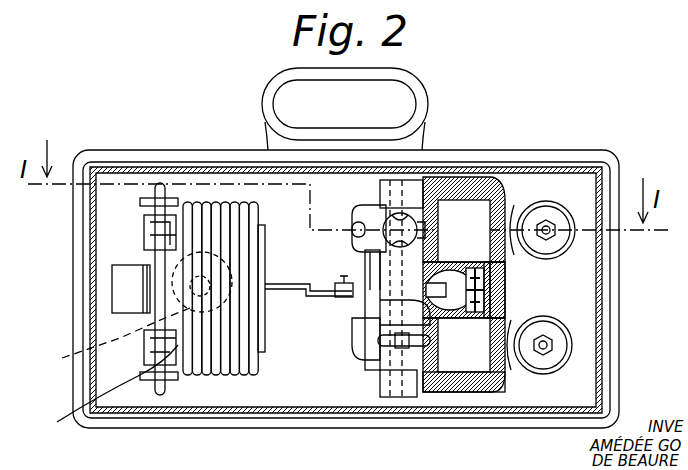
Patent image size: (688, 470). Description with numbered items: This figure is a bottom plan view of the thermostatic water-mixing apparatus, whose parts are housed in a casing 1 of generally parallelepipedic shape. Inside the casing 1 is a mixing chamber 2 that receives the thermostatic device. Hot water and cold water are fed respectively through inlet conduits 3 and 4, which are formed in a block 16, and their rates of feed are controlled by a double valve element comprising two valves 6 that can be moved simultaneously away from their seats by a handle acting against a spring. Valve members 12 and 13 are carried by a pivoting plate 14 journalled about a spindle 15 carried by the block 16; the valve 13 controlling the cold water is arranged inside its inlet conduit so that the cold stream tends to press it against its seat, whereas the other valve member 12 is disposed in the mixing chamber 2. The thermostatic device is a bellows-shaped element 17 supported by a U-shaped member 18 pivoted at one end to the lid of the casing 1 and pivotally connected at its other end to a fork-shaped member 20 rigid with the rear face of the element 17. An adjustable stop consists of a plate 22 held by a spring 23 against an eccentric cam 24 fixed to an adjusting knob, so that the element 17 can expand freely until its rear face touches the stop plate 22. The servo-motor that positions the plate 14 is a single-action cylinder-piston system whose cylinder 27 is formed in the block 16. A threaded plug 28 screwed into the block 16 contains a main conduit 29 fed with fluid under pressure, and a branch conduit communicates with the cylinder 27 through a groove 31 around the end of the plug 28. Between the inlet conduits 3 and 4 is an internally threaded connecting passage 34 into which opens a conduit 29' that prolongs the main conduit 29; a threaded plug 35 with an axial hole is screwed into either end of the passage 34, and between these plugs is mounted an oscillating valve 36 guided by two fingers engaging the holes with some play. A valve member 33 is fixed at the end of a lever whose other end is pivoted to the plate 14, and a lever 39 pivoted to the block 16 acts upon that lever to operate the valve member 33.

The casing 1 is at (85, 306).
The mixing chamber 2 is at (275, 380).
The inlet conduit 3 is at (467, 210).
The inlet conduit 4 is at (482, 360).
The valves 6 is at (568, 240).
The valve member 12 is at (380, 200).
The valve member 13 is at (452, 400).
The pivoting plate 14 is at (355, 355).
The spindle 15 is at (395, 397).
The block 16 is at (412, 192).
The thermostatic element 17 is at (215, 350).
The U-shaped member 18 is at (160, 258).
The fork-shaped member 20 is at (108, 401).
The stop plate 22 is at (130, 289).
The spring 23 is at (170, 272).
The eccentric cam 24 is at (110, 349).
The cylinder 27 is at (298, 279).
The threaded plug 28 is at (395, 256).
The main conduit 29 is at (333, 310).
The conduit 29' is at (360, 345).
The groove 31 is at (492, 300).
The valve member 33 is at (372, 298).
The connecting passage 34 is at (505, 302).
The threaded plug 35 is at (505, 287).
The oscillating valve 36 is at (500, 300).
The lever 39 is at (365, 290).